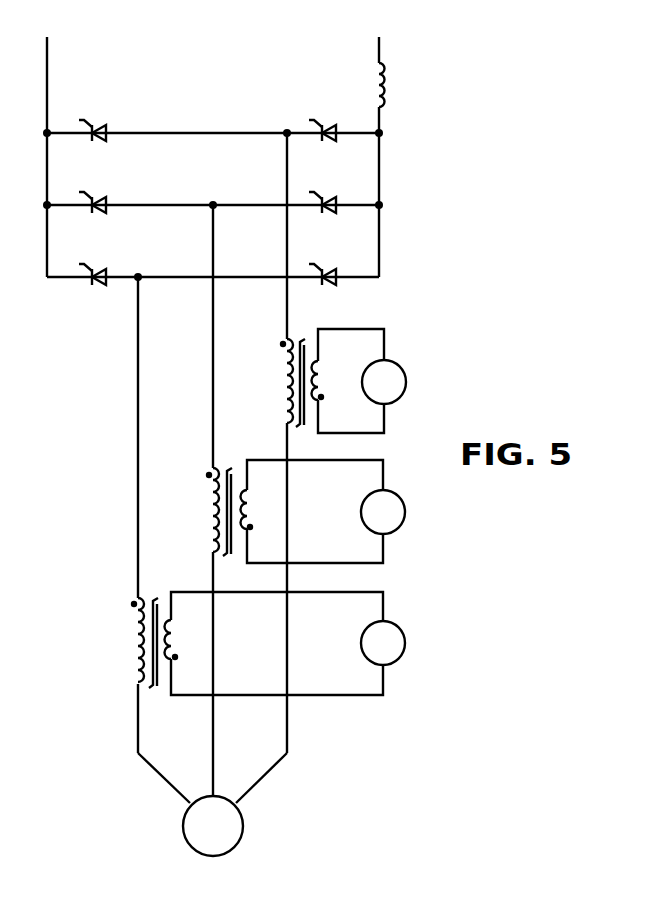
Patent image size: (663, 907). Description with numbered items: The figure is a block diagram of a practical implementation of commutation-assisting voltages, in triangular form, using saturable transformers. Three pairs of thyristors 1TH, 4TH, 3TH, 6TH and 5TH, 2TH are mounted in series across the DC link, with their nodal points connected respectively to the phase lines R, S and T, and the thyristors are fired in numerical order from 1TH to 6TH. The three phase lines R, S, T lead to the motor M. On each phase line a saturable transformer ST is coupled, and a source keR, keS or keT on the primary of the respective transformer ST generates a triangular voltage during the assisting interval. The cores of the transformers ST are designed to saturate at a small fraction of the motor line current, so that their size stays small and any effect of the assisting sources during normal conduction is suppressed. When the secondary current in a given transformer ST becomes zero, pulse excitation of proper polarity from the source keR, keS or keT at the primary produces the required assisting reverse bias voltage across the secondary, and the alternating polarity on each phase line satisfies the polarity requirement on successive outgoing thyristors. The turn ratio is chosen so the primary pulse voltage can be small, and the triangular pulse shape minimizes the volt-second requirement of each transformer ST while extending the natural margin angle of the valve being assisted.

The thyristor 1TH is at (108, 116).
The thyristor 2TH is at (333, 260).
The thyristor 3TH is at (108, 191).
The thyristor 4TH is at (333, 116).
The thyristor 5TH is at (108, 260).
The thyristor 6TH is at (333, 191).
The phase line T is at (156, 540).
The phase line S is at (205, 500).
The phase line R is at (261, 468).
The saturable transformer ST is at (209, 513).
The source keR is at (362, 381).
The source keS is at (326, 511).
The source keT is at (288, 643).
The motor M is at (213, 826).